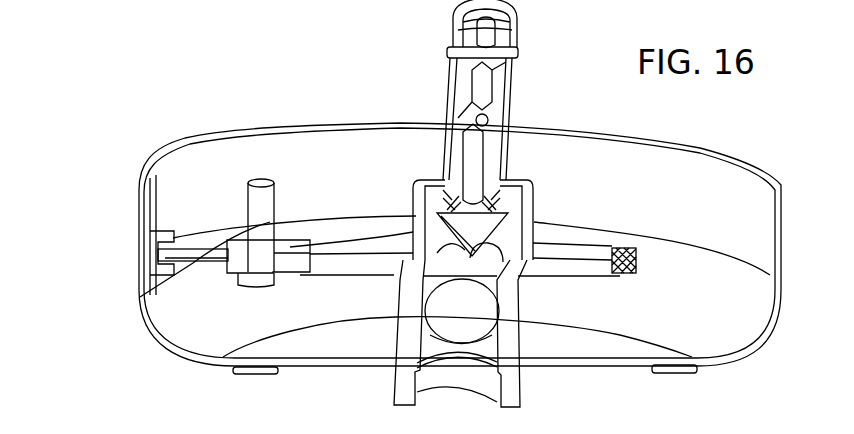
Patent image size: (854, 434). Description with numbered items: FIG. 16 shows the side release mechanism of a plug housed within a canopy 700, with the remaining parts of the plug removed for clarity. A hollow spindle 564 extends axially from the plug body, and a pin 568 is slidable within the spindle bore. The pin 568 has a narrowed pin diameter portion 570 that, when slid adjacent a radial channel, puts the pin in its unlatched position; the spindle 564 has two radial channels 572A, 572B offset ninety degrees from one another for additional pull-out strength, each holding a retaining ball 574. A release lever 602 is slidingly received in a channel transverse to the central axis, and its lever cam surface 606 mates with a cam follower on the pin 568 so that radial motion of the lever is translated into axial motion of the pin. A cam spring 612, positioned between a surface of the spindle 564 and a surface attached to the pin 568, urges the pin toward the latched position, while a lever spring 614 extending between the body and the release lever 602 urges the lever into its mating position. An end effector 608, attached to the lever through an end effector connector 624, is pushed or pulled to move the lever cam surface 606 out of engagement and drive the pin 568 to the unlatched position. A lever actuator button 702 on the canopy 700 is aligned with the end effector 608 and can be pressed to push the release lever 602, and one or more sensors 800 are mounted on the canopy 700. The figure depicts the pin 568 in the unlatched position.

The spindle 564 is at (514, 0).
The pin 568 is at (477, 90).
The narrowed pin diameter portion 570 is at (497, 118).
The radial channel 572A is at (497, 64).
The radial channel 572B is at (468, 118).
The retaining ball 574 is at (452, 43).
The release lever 602 is at (332, 268).
The lever cam surface 606 is at (545, 268).
The end effector 608 is at (195, 262).
The cam spring 612 is at (300, 240).
The lever spring 614 is at (628, 230).
The end effector connector 624 is at (148, 6).
The canopy 700 is at (140, 182).
The lever actuator button 702 is at (140, 236).
The sensor 800 is at (683, 372).